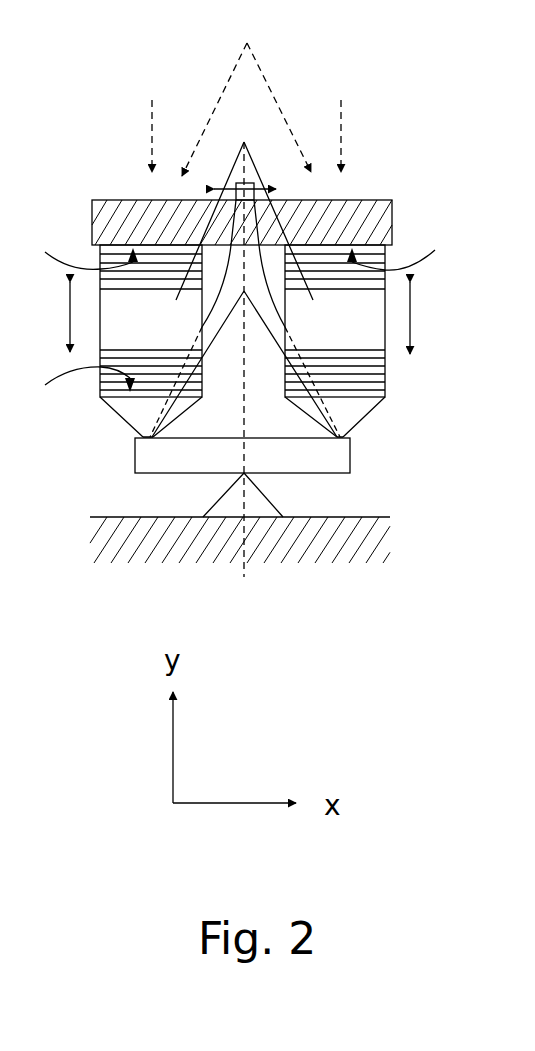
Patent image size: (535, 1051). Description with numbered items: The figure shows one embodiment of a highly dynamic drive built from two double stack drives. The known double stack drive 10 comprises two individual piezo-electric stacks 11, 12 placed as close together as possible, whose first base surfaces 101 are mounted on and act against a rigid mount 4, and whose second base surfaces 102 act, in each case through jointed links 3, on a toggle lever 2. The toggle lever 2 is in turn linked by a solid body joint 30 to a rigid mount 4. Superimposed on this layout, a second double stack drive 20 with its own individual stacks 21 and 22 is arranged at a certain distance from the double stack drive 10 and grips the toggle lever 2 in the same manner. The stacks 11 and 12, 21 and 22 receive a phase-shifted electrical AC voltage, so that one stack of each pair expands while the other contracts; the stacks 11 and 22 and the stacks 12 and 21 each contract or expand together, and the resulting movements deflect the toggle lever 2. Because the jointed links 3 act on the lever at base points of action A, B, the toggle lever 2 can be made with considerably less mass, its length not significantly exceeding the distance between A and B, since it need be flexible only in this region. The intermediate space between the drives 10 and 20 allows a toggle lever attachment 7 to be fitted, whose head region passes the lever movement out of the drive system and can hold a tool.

The toggle lever 2 is at (328, 460).
The jointed links 3 is at (347, 413).
The rigid mount 4 is at (382, 223).
The toggle lever attachment 7 is at (273, 323).
The double stack drive 10 is at (244, 203).
The individual piezo-electric stack 11 is at (171, 337).
The individual piezo-electric stack 12 is at (355, 337).
The second double stack drive 20 is at (246, 92).
The individual piezo-electric stack 21 is at (341, 121).
The individual piezo-electric stack 22 is at (152, 121).
The solid body joint 30 is at (248, 495).
The first base surfaces 101 is at (258, 243).
The second base surfaces 102 is at (82, 395).
The base point of action A is at (145, 438).
The base point of action B is at (343, 438).